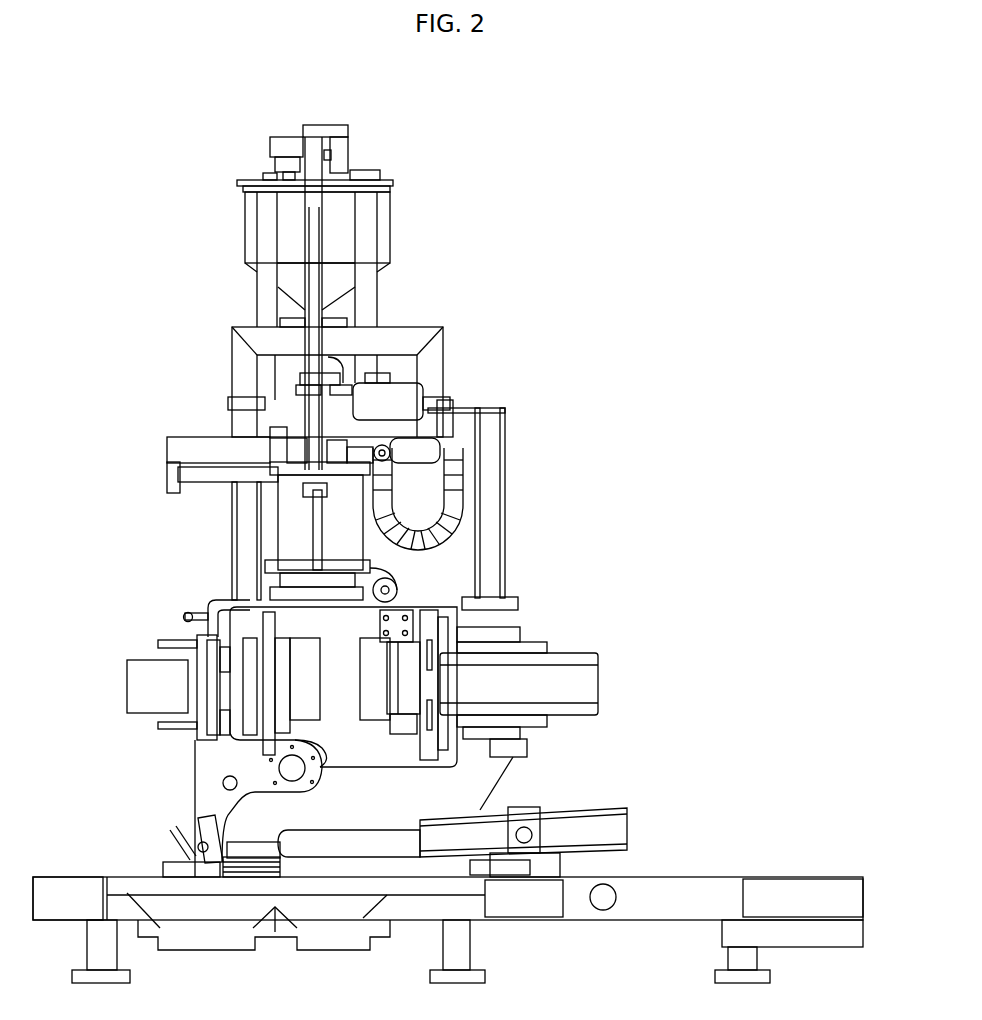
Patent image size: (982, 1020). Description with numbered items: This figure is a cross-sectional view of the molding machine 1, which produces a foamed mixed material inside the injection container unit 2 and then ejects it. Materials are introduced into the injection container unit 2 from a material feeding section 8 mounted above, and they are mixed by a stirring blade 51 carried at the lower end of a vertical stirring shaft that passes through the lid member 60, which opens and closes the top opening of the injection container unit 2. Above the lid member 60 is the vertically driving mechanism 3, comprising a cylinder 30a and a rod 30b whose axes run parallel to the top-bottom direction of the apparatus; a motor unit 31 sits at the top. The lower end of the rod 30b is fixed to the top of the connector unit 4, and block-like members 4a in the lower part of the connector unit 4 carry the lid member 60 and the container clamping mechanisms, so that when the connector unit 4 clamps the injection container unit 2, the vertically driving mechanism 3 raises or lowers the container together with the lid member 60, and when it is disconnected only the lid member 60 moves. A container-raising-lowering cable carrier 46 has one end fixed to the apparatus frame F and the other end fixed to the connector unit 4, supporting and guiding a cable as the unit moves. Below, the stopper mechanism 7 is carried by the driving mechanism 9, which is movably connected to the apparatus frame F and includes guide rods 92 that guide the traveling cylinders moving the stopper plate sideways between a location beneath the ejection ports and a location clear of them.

The molding machine 1 is at (690, 145).
The injection container unit 2 is at (266, 548).
The vertically driving mechanism 3 is at (554, 120).
The connector unit 4 is at (282, 401).
The block-like member 4a is at (393, 433).
The stopper mechanism 7 is at (397, 600).
The material feeding section 8 is at (292, 217).
The driving mechanism 9 is at (138, 531).
The motor 31 is at (350, 158).
The cylinder 30a is at (322, 272).
The rod 30b is at (305, 243).
The container-raising-lowering cable carrier 46 is at (452, 520).
The stirring blade 51 is at (316, 538).
The lid member 60 is at (390, 460).
The guide rod 92 is at (175, 485).
The apparatus frame F is at (485, 432).